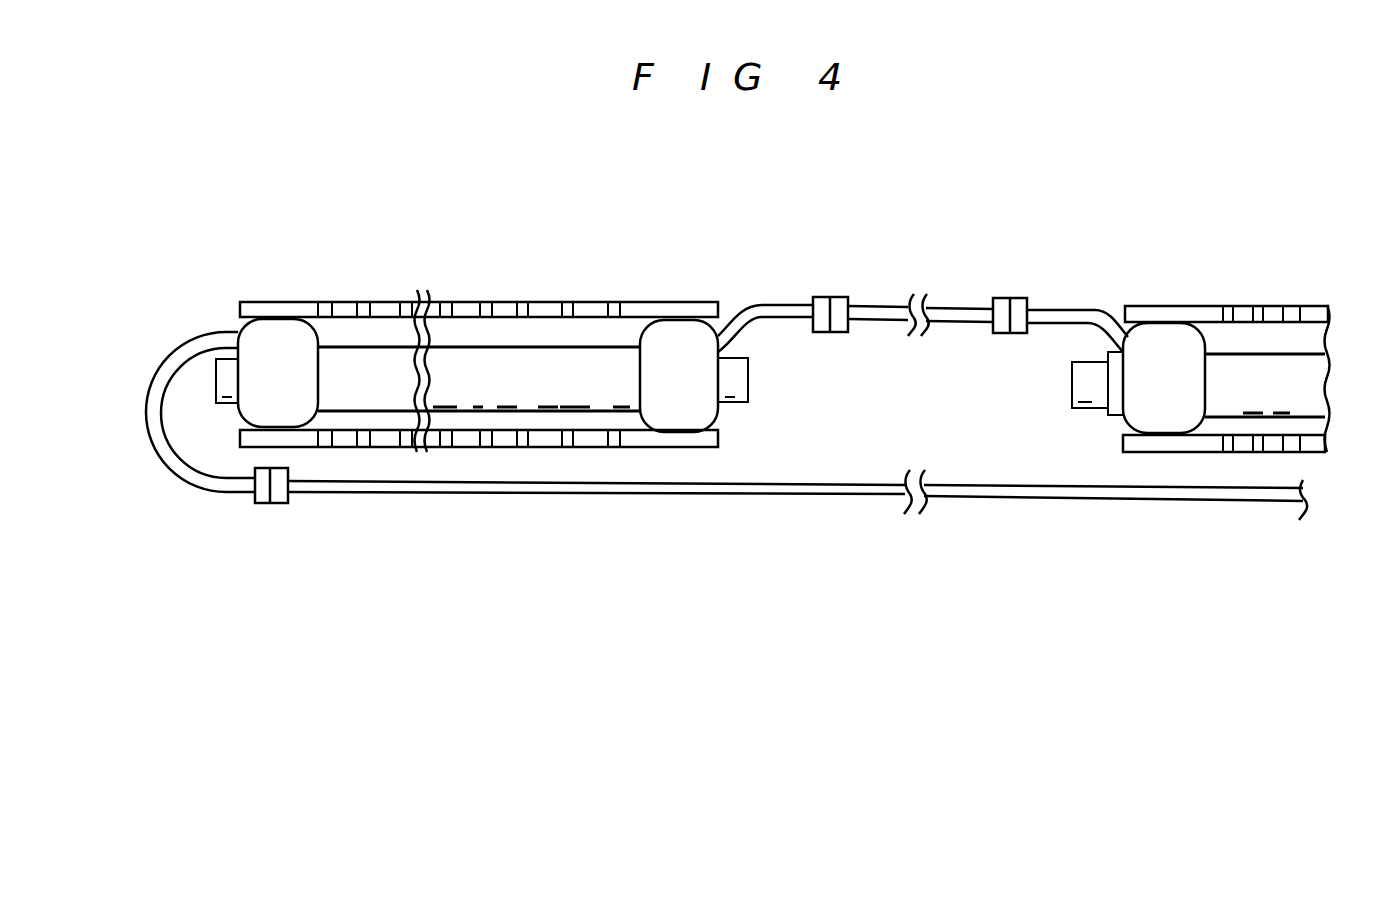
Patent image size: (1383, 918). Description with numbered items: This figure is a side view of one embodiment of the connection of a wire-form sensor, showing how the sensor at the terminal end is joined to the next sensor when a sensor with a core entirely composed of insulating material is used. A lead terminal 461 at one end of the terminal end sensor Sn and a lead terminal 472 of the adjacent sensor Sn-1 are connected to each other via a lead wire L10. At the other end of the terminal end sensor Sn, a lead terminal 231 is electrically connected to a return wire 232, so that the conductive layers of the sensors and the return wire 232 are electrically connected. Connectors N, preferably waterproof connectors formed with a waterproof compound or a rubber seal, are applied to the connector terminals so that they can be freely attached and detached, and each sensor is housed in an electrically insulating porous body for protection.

The lead terminal 231 is at (190, 333).
The connector N is at (263, 503).
The return wire 232 is at (767, 500).
The lead terminal 461 is at (768, 305).
The lead wire L10 is at (887, 308).
The lead terminal 472 is at (1053, 308).
The sensor Sn is at (510, 417).
The sensor Sn-1 is at (1250, 419).